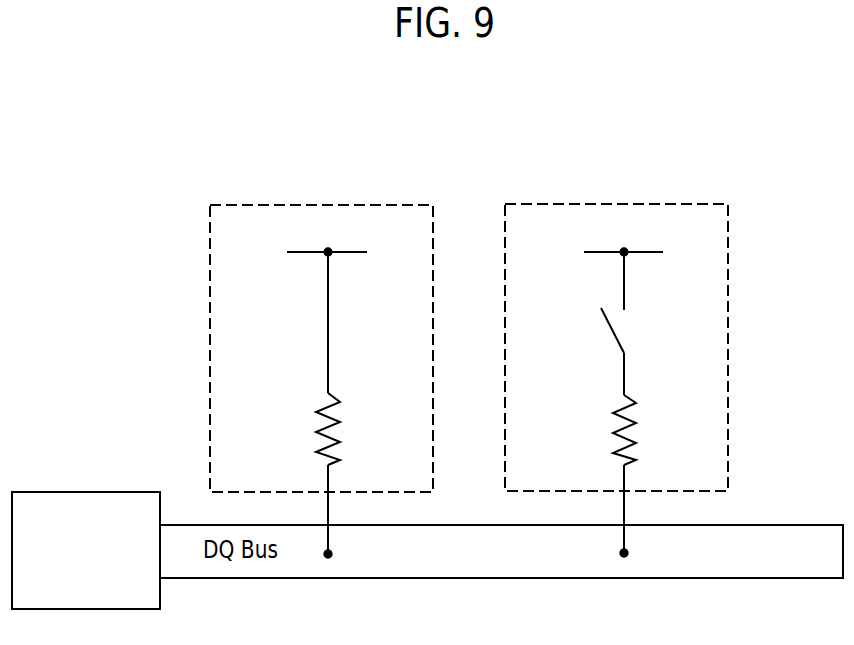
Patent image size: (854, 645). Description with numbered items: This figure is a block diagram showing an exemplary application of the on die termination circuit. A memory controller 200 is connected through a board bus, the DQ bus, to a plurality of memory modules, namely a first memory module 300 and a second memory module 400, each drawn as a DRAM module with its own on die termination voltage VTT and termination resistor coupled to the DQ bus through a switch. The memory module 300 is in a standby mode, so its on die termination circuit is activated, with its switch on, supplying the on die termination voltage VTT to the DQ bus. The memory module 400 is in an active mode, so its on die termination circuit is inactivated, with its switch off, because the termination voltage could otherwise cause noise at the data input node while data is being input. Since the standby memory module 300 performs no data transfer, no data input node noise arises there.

The memory controller 200 is at (88, 492).
The memory module 300 is at (373, 205).
The memory module 400 is at (668, 204).